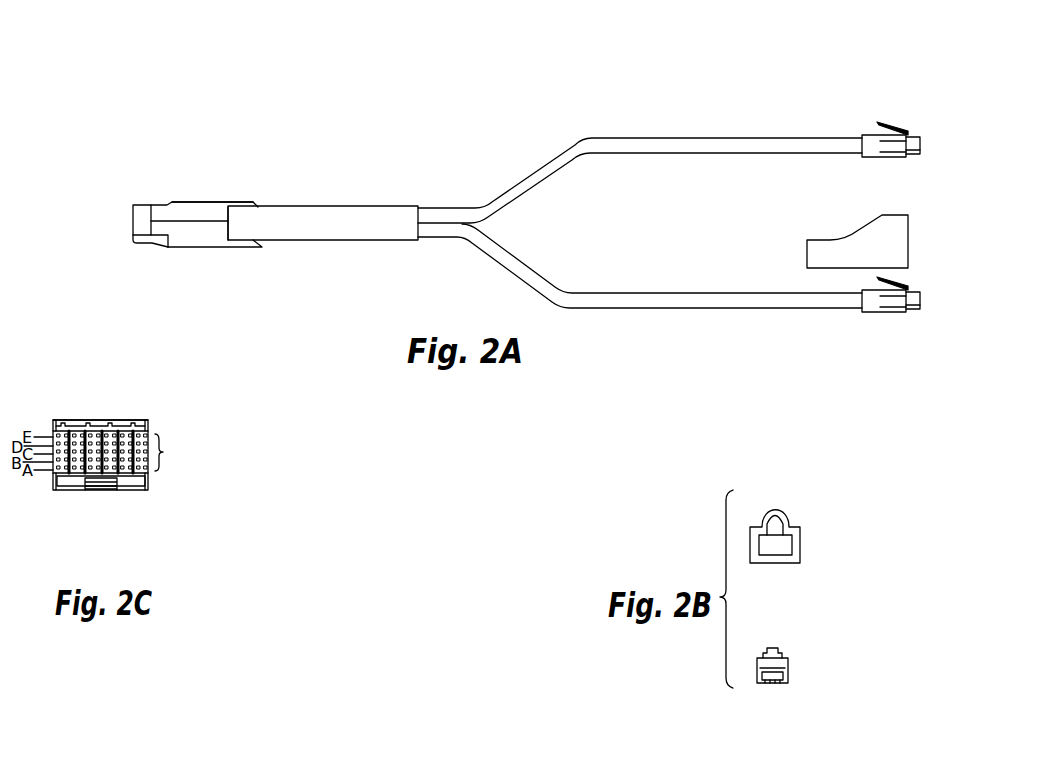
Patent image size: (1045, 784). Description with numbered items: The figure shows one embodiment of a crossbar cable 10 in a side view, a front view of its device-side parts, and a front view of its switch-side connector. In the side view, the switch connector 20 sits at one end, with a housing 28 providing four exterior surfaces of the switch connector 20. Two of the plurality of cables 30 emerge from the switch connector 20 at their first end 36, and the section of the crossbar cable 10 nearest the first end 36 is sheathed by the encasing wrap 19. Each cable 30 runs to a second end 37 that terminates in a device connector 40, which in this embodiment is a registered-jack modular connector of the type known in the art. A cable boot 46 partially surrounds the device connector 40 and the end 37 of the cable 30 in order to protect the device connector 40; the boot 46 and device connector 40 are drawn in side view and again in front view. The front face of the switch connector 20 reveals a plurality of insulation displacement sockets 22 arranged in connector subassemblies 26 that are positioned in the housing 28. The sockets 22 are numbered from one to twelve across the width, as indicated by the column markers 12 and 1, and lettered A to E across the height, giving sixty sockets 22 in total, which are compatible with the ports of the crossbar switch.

In FIG. 2A, the crossbar cable 10 is at (407, 86).
In FIG. 2A, the encasing wrap 19 is at (326, 241).
In FIG. 2A, the switch connector 20 is at (190, 252).
In FIG. 2C, the switch connector 20 is at (95, 522).
In FIG. 2C, the sockets 22 is at (173, 452).
In FIG. 2C, the connector subassemblies 26 is at (137, 411).
In FIG. 2A, the housing 28 is at (200, 201).
In FIG. 2C, the housing 28 is at (127, 420).
In FIG. 2A, the cables 30 is at (697, 322).
In FIG. 2A, the first end 36 is at (238, 201).
In FIG. 2A, the second end 37 is at (844, 137).
In FIG. 2A, the device connector 40 is at (873, 158).
In FIG. 2B, the device connector 40 is at (776, 637).
In FIG. 2A, the cable boot 46 is at (848, 236).
In FIG. 2B, the cable boot 46 is at (773, 512).
In FIG. 2C, the pin column 12 is at (57, 430).
In FIG. 2C, the pin column 1 is at (144, 430).